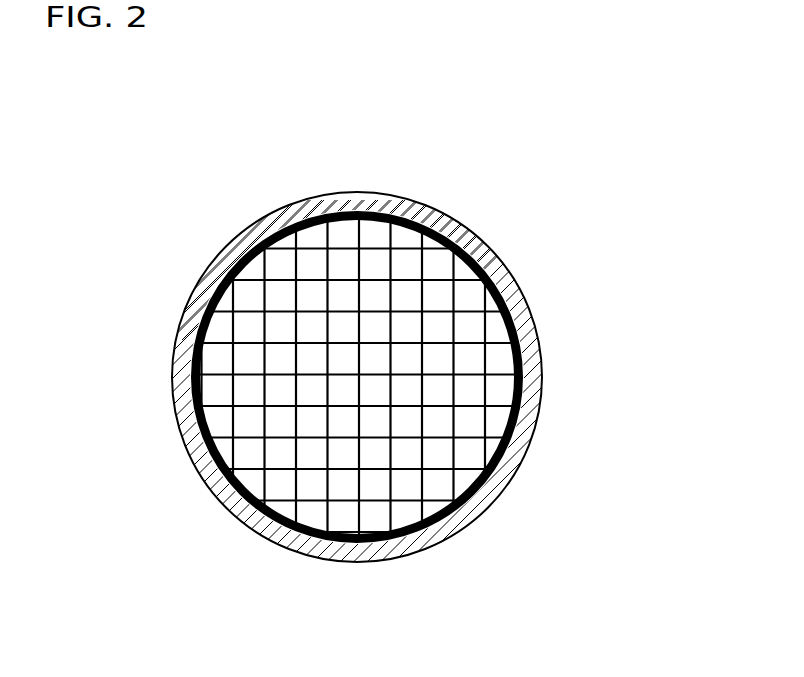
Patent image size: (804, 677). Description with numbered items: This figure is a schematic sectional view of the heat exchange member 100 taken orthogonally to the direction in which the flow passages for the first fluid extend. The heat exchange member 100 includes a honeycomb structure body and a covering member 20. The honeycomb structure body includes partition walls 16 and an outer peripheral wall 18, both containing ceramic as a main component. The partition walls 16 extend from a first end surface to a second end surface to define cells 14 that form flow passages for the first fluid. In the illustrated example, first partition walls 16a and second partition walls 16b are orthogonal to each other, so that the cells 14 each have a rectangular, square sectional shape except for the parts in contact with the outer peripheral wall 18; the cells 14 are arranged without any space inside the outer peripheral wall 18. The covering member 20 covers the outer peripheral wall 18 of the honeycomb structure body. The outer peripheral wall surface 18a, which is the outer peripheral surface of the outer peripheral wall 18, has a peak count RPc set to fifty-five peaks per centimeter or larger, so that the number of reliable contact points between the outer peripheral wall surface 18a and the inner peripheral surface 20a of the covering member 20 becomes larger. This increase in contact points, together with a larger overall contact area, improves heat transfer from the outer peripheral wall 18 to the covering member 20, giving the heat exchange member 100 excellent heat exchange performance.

The heat exchange member 100 is at (598, 193).
The cells 14 is at (307, 298).
The partition walls 16 is at (507, 121).
The first partition walls 16a is at (362, 267).
The second partition walls 16b is at (402, 278).
The outer peripheral wall 18 is at (263, 242).
The outer peripheral wall surface 18a is at (292, 221).
The covering member 20 is at (531, 321).
The inner peripheral surface 20a is at (524, 357).